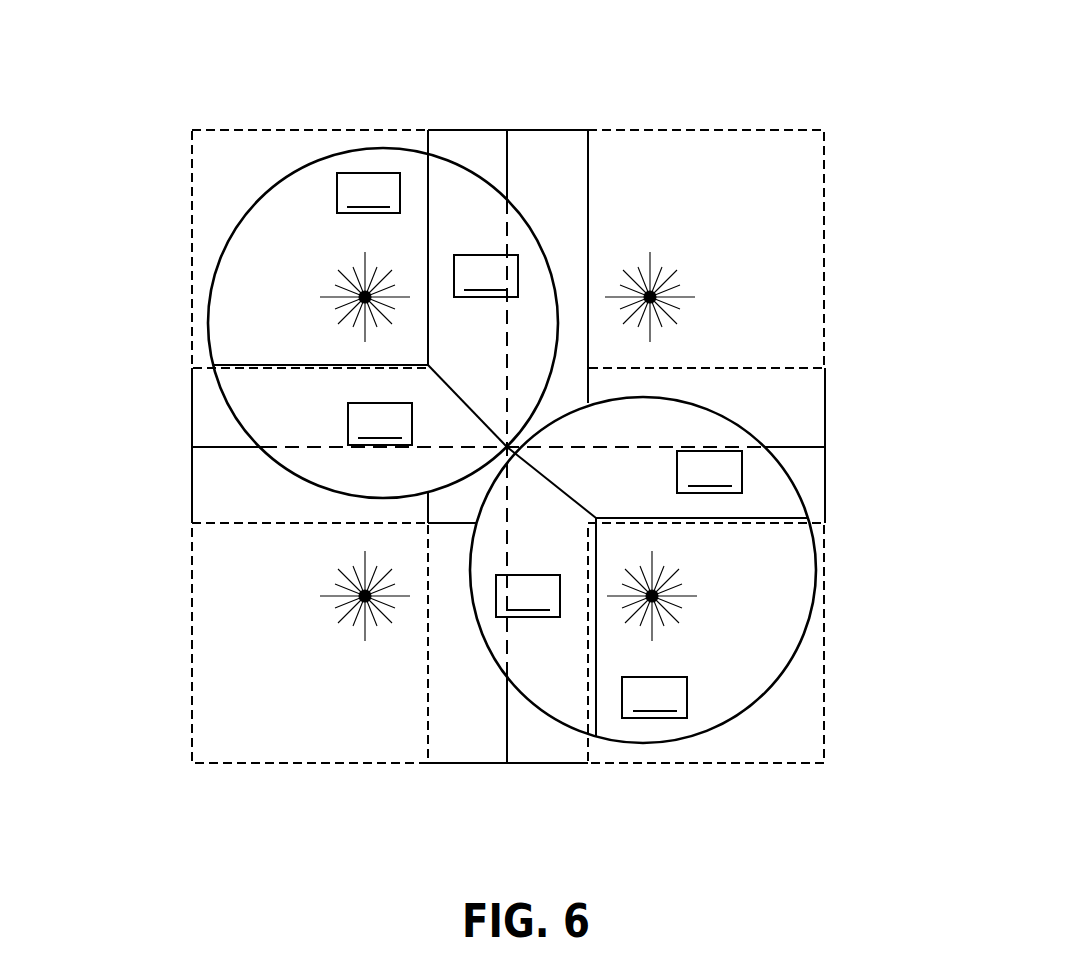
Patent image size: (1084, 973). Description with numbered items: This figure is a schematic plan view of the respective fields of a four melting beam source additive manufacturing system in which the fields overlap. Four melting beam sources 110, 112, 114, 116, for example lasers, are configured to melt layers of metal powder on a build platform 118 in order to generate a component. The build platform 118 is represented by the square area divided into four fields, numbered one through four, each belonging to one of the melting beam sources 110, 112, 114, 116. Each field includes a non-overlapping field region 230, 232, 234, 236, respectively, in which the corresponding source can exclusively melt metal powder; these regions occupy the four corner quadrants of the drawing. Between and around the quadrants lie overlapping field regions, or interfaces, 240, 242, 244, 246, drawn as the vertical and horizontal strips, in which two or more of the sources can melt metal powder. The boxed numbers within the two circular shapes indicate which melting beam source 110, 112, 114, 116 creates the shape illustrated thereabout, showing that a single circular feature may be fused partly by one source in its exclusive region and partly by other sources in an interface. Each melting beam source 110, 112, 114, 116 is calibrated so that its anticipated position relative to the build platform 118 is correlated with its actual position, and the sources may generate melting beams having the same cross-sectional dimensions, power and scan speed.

The melting beam source 110 is at (353, 286).
The melting beam source 112 is at (665, 294).
The melting beam source 114 is at (655, 607).
The melting beam source 116 is at (362, 594).
The build platform 118 is at (503, 443).
The non-overlapping field region 230 is at (258, 158).
The non-overlapping field region 232 is at (800, 233).
The non-overlapping field region 234 is at (733, 735).
The non-overlapping field region 236 is at (218, 668).
The overlapping field region 240 is at (548, 92).
The overlapping field region 242 is at (858, 410).
The overlapping field region 244 is at (536, 793).
The overlapping field region 246 is at (162, 492).